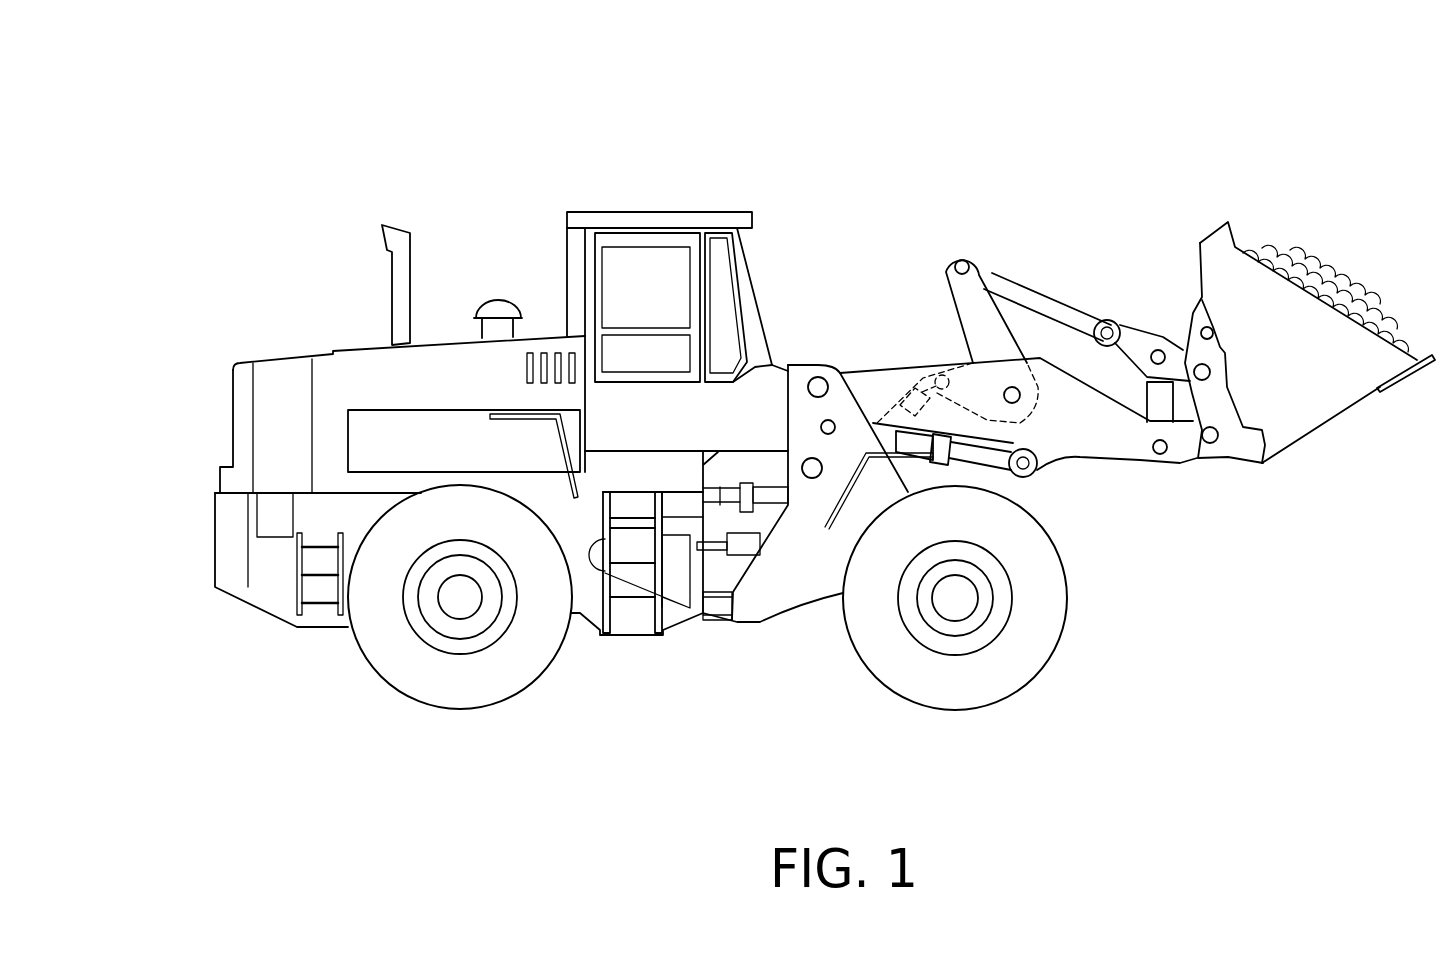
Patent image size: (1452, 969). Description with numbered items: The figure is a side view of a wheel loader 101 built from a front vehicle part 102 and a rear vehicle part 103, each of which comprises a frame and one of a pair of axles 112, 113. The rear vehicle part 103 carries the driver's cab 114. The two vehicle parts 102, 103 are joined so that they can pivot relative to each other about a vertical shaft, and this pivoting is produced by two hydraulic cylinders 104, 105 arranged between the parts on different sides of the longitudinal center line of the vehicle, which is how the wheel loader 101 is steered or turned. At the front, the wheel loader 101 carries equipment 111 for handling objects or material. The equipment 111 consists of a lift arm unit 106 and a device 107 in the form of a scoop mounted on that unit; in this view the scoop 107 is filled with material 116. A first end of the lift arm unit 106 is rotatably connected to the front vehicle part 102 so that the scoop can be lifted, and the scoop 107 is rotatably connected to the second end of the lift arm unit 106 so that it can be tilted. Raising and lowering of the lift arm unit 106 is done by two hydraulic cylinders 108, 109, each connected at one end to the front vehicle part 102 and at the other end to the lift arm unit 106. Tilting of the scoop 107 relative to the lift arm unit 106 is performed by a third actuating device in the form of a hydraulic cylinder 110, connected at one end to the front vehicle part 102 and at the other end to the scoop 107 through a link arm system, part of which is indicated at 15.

The wheel loader 101 is at (513, 128).
The front vehicle part 102 is at (772, 590).
The rear vehicle part 103 is at (275, 583).
The hydraulic cylinder 104 is at (651, 613).
The hydraulic cylinder 105 is at (772, 498).
The lift arm unit 106 is at (1180, 453).
The device in the form of a scoop 107 is at (1295, 402).
The hydraulic cylinder 108 is at (1070, 531).
The hydraulic cylinder 109 is at (987, 460).
The hydraulic cylinder 110 is at (920, 393).
The equipment 111 is at (1122, 192).
The axle 112 is at (453, 600).
The axle 113 is at (960, 598).
The driver's cab 114 is at (653, 218).
The material 116 is at (1320, 287).
The tilt link 15 is at (1038, 298).